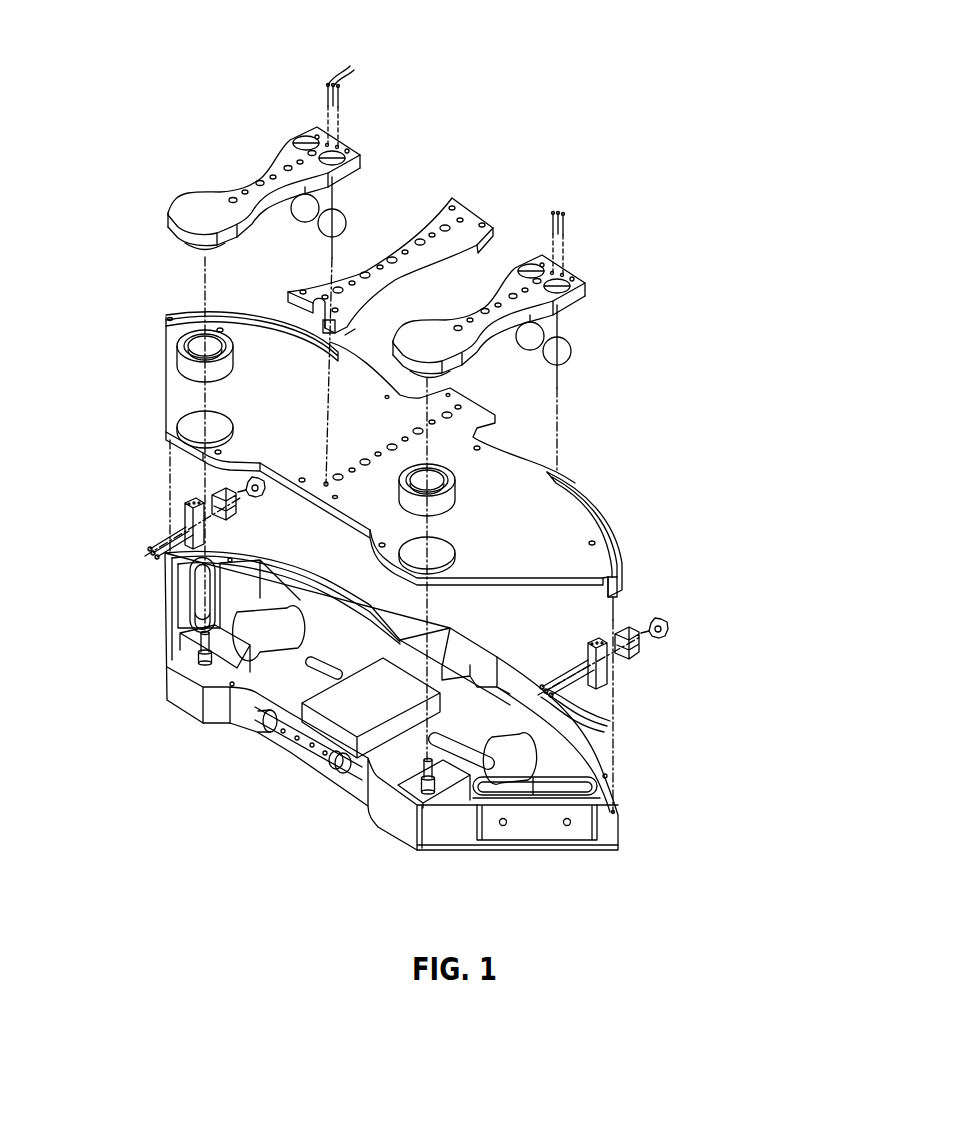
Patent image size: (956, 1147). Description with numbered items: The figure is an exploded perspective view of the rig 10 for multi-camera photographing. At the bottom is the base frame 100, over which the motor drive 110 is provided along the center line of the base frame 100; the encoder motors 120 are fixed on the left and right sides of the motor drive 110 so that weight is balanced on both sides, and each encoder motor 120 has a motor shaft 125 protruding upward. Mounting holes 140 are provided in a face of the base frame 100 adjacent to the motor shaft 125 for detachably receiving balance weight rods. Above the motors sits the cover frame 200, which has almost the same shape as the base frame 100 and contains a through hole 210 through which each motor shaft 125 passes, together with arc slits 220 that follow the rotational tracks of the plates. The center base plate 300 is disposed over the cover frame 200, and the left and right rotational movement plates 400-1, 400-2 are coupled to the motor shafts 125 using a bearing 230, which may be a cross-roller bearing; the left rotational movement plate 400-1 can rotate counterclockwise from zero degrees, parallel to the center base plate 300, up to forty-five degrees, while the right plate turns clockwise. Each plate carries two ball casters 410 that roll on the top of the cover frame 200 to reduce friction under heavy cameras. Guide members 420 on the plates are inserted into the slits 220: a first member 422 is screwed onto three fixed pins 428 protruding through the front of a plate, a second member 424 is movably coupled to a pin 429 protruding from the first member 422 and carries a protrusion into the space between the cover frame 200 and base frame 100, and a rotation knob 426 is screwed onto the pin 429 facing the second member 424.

The rig for multi-camera photographing 10 is at (518, 101).
The base frame 100 is at (398, 820).
The motor drive 110 is at (350, 712).
The encoder motors 120 is at (222, 653).
The motor shaft 125 is at (190, 637).
The mounting holes 140 is at (337, 770).
The cover frame 200 is at (560, 507).
The through hole 210 is at (190, 423).
The arc slits 220 is at (643, 507).
The bearing 230 is at (183, 340).
The center base plate 300 is at (470, 223).
The left rotational movement plate 400-1 is at (283, 157).
The right rotational movement plate 400-2 is at (618, 258).
The ball caster 410 is at (343, 217).
The guide members 420 is at (747, 617).
The first member 422 is at (607, 677).
The second member 424 is at (640, 650).
The rotation knob 426 is at (663, 617).
The fixed pins 428 is at (349, 92).
The pin 429 is at (605, 726).